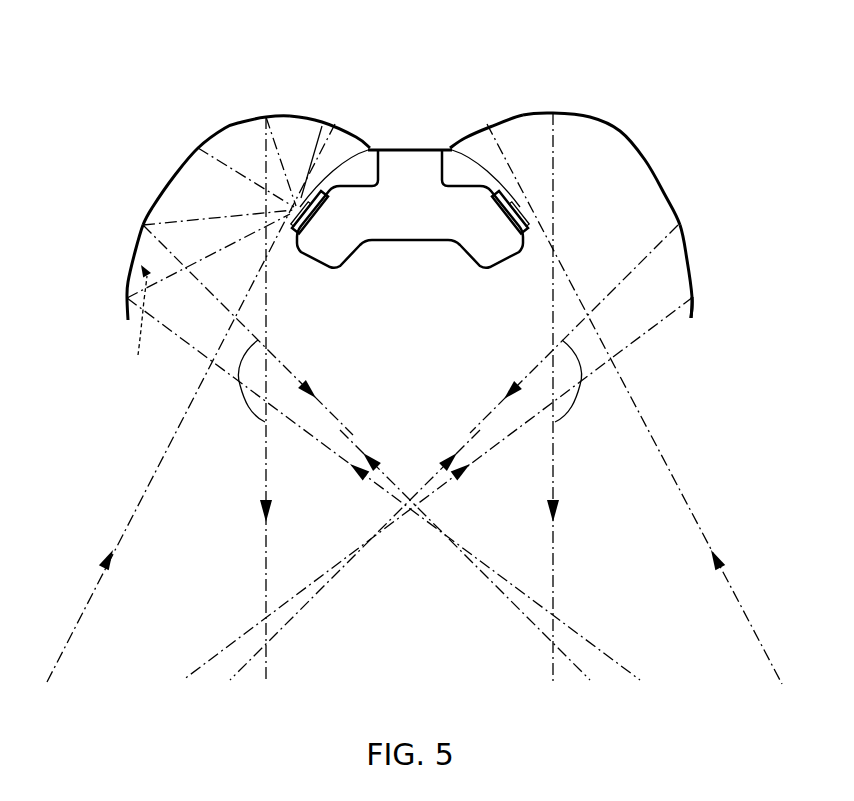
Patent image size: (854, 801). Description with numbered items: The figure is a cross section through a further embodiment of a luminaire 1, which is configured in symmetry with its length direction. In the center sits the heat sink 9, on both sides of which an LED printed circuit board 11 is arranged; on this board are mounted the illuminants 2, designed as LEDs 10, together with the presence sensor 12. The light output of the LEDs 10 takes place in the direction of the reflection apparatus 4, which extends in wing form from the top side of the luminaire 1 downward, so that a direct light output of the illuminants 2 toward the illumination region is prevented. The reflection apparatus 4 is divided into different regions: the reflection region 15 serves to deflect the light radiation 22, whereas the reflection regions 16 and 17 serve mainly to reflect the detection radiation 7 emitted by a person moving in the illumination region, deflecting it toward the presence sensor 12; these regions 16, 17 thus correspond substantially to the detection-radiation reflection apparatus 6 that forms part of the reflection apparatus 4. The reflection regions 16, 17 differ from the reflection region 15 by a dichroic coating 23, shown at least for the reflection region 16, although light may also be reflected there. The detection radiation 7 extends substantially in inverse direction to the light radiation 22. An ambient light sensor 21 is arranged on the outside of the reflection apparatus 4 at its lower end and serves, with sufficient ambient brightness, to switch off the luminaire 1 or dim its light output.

The luminaire 1 is at (165, 93).
The illuminants 2 is at (292, 212).
The reflection apparatus 4 is at (677, 198).
The detection-radiation reflection apparatus 6 is at (411, 195).
The detection radiation 7 is at (150, 477).
The heat sink 9 is at (407, 192).
The LEDs 10 is at (410, 212).
The LED printed circuit board 11 is at (367, 145).
The presence sensor 12 is at (410, 212).
The reflection region 15 is at (285, 107).
The reflection region 16 is at (138, 228).
The reflection region 17 is at (357, 130).
The ambient light sensor 21 is at (692, 321).
The light radiation 22 is at (410, 401).
The dichroic coating 23 is at (138, 324).